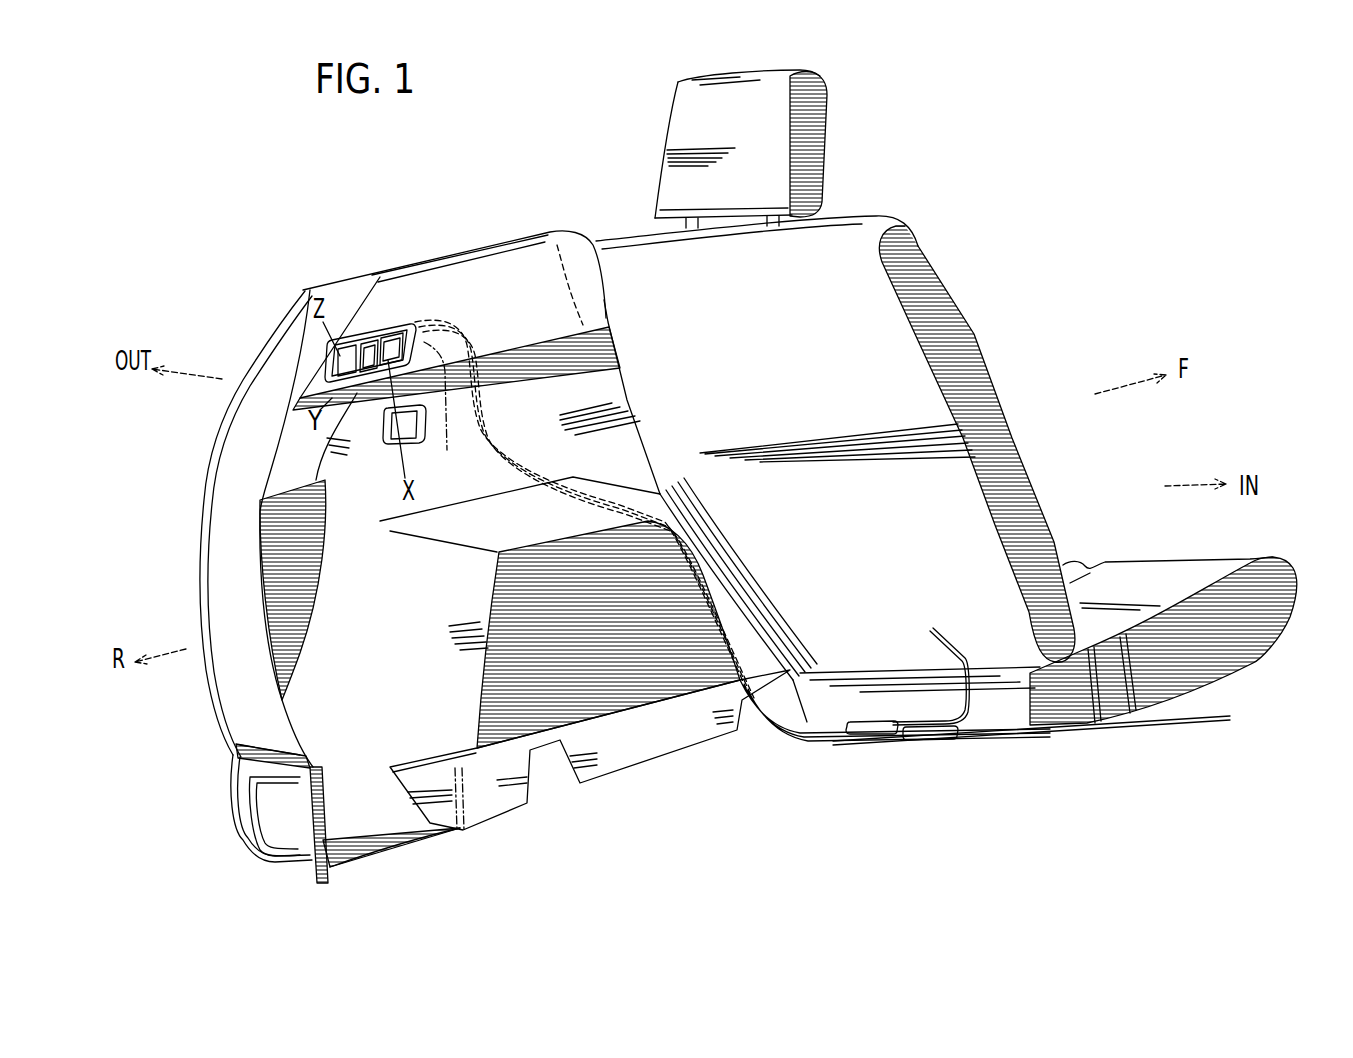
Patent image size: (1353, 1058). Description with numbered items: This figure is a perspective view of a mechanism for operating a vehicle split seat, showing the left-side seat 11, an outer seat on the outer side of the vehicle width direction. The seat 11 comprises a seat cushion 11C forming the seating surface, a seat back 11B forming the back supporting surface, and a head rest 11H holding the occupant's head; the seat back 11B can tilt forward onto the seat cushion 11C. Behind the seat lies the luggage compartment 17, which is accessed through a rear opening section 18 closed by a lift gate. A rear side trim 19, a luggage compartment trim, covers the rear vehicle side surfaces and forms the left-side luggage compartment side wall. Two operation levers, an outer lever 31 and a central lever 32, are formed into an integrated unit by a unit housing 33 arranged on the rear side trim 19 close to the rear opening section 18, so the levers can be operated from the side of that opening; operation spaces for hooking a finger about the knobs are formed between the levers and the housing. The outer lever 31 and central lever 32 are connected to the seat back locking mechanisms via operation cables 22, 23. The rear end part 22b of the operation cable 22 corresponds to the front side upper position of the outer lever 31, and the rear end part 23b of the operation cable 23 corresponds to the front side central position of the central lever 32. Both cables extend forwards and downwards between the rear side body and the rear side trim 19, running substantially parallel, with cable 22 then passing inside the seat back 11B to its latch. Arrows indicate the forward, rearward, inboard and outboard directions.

The left-side seat 11 is at (1014, 336).
The seat back 11B is at (778, 394).
The seat cushion 11C is at (1113, 587).
The head rest 11H is at (690, 128).
The luggage compartment 17 is at (357, 631).
The rear opening section 18 is at (237, 503).
The rear side trim 19 is at (461, 237).
The operation cable 22 is at (962, 660).
The rear end part of the operation cable 22b is at (432, 325).
The operation cable 23 is at (1142, 729).
The rear end part of the operation cable 23b is at (425, 409).
The outer lever 31 is at (369, 343).
The central lever 32 is at (398, 343).
The unit housing 33 is at (327, 371).